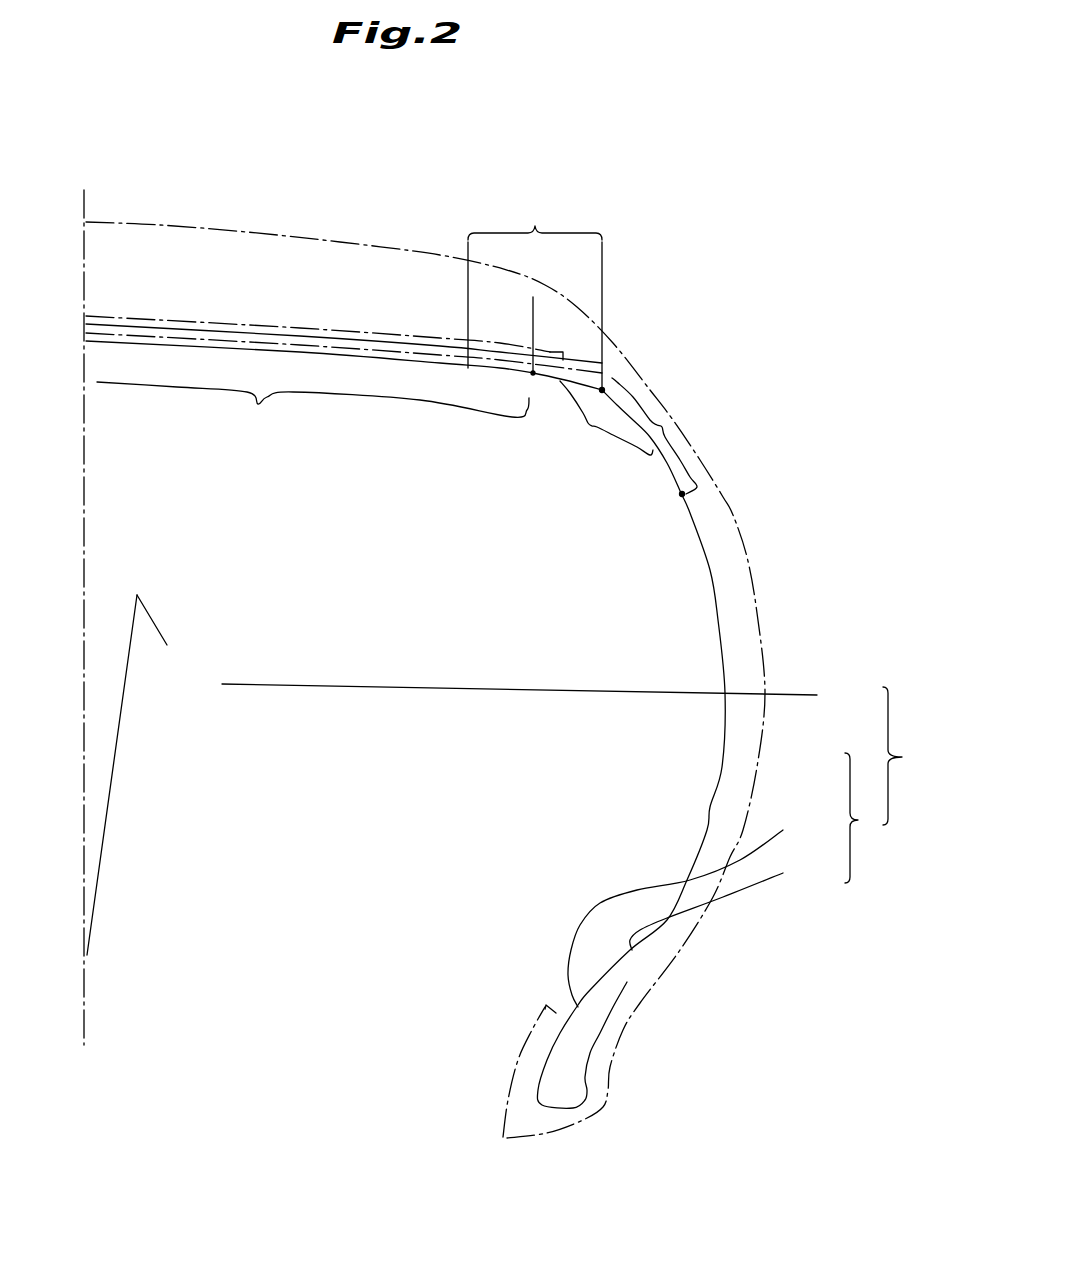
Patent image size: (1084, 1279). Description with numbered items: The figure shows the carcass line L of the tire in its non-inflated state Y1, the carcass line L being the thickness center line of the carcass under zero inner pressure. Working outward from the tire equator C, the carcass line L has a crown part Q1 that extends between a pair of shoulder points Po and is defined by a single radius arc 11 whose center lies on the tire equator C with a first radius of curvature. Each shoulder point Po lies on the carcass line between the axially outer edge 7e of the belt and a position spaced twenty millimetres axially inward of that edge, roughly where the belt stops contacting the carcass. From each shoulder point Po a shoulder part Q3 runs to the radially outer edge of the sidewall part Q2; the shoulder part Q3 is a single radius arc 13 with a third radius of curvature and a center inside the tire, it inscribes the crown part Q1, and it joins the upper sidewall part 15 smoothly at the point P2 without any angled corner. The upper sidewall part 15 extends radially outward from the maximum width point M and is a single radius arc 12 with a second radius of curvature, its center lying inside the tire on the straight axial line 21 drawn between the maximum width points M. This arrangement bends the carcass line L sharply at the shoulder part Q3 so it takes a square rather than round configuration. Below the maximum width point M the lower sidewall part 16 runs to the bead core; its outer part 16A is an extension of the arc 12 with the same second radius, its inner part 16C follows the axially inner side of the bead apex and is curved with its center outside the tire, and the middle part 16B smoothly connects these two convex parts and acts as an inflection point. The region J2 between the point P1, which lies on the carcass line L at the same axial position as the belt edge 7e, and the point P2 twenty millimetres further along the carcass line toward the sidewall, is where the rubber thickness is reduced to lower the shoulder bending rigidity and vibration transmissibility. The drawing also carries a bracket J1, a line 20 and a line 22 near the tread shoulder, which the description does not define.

The non-inflated state Y1 is at (411, 216).
The single radius arc 11 is at (210, 345).
The single radius arc 12 is at (355, 686).
The single radius arc 13 is at (560, 378).
The upper sidewall part 15 is at (723, 655).
The lower sidewall part 16 is at (866, 818).
The outer part 16A is at (723, 767).
The middle part 16B is at (735, 905).
The inner part 16C is at (704, 907).
The tread edge line 20 is at (533, 318).
The straight axial line 21 is at (522, 690).
The shoulder reference line 22 is at (603, 276).
The axially outer edge of the belt 7e is at (606, 358).
The tire equator C is at (84, 571).
The tread shoulder width J1 is at (535, 291).
The region J2 is at (664, 436).
The point P1 is at (606, 385).
The point P2 is at (686, 495).
The shoulder point Po is at (533, 378).
The maximum width point M is at (713, 686).
The carcass line L is at (723, 732).
The crown part Q1 is at (313, 410).
The sidewall part Q2 is at (913, 756).
The shoulder part Q3 is at (606, 420).